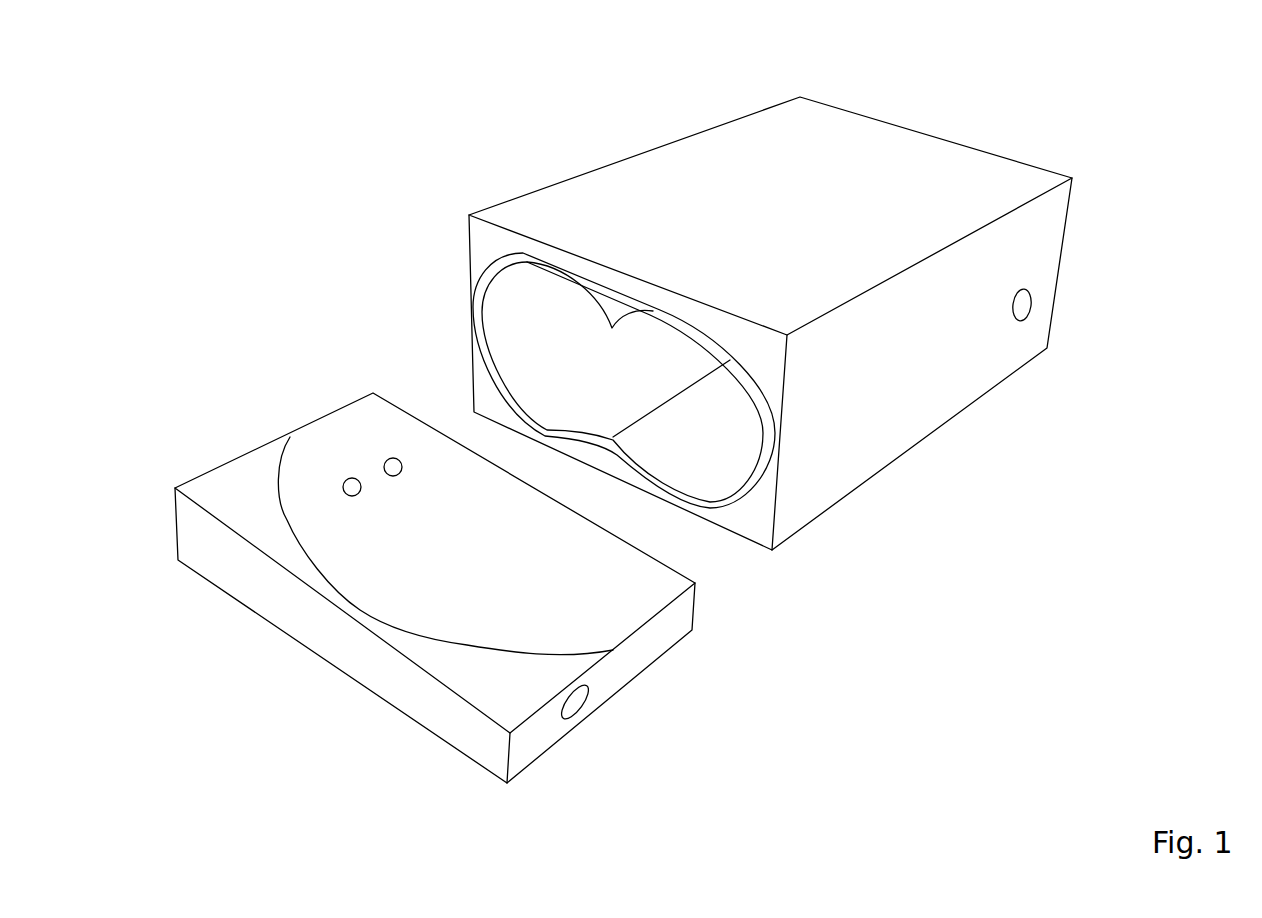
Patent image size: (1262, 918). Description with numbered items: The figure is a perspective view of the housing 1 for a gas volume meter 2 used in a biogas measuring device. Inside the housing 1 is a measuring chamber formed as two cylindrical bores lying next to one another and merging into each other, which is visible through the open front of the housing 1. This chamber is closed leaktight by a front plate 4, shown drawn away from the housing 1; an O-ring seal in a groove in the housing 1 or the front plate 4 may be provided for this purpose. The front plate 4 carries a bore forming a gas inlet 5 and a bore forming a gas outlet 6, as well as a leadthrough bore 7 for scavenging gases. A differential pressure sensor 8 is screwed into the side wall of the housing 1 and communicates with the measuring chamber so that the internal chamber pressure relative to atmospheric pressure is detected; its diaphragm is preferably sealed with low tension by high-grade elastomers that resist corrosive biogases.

The housing 1 is at (647, 152).
The gas volume meter 2 is at (353, 165).
The front plate 4 is at (308, 635).
The gas inlet 5 is at (342, 479).
The gas outlet 6 is at (383, 459).
The leadthrough bore 7 is at (590, 710).
The differential pressure sensor 8 is at (1025, 303).